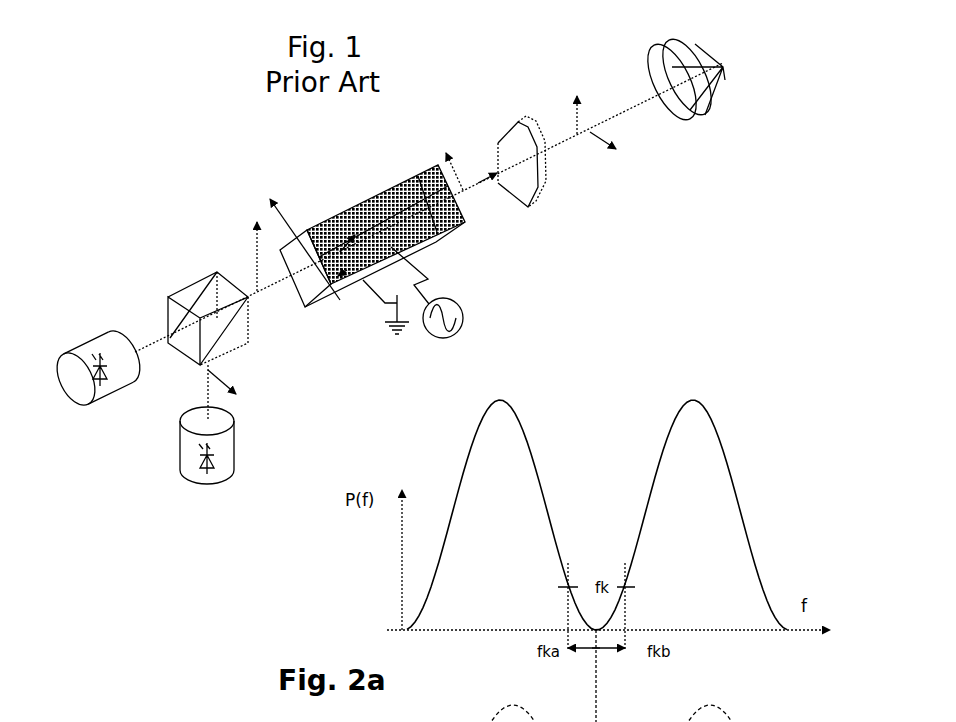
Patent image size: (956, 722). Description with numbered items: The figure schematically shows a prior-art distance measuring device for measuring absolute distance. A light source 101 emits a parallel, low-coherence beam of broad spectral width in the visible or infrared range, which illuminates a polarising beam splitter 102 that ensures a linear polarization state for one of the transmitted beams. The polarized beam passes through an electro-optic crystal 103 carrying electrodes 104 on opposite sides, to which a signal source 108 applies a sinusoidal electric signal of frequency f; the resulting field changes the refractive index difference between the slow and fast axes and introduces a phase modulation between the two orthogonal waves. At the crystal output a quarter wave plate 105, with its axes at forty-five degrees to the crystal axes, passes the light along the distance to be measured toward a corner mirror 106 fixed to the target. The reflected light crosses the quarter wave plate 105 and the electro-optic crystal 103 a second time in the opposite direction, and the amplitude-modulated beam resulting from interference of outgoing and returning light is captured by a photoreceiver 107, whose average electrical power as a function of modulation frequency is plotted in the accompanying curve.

The light source 101 is at (102, 357).
The polarising beam splitter 102 is at (195, 290).
The electro-optic crystal 103 is at (387, 207).
The electrodes 104 is at (358, 281).
The quarter wave plate 105 is at (510, 143).
The corner mirror 106 is at (678, 77).
The photoreceiver 107 is at (228, 437).
The signal source 108 is at (450, 303).